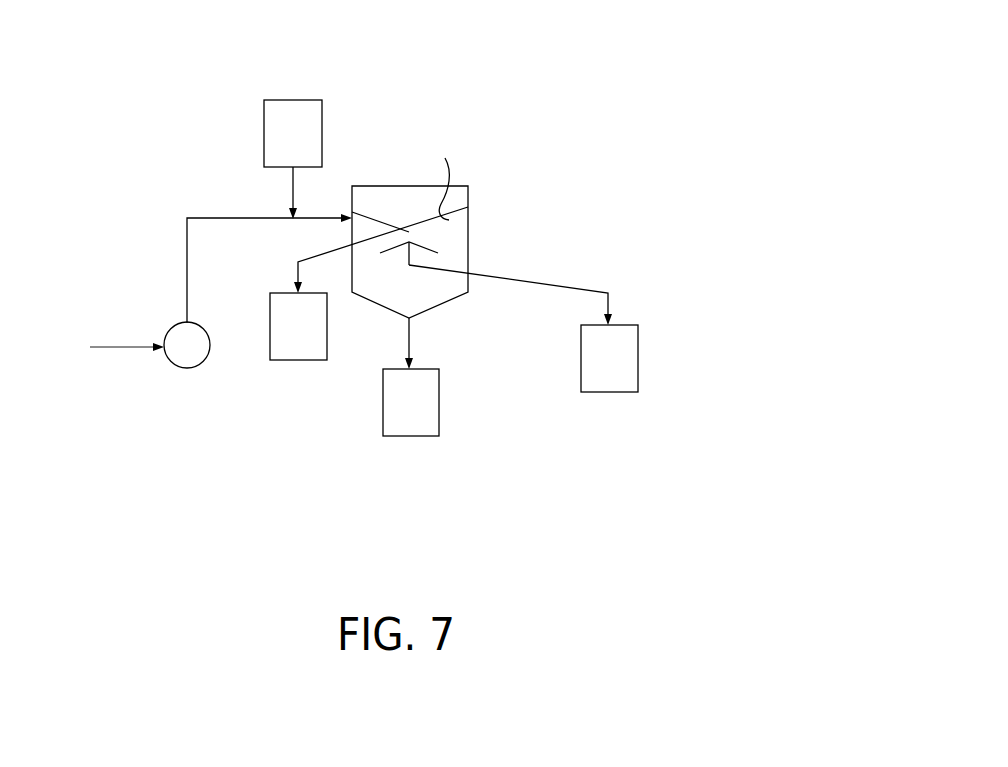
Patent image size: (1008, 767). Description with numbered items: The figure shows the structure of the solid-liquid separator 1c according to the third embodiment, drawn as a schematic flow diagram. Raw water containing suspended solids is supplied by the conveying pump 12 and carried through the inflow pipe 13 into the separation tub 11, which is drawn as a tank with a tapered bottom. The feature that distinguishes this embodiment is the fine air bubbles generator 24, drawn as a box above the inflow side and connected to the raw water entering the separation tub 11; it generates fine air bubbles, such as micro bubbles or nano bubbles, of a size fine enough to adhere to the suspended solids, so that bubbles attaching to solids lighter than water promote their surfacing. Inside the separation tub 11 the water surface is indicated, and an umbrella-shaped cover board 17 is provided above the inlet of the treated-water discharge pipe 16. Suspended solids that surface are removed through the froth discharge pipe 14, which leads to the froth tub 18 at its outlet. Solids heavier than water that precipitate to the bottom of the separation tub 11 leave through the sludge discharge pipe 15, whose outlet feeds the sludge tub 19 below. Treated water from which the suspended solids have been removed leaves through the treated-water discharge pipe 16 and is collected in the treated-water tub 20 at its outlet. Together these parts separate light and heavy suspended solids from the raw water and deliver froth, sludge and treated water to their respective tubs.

The solid-liquid separator 1c is at (574, 72).
The fine air bubbles generator 24 is at (293, 100).
The inflow pipe 13 is at (207, 218).
The conveying pump 12 is at (185, 368).
The separation tub 11 is at (468, 195).
The cover board 17 is at (432, 247).
The froth discharge pipe 14 is at (323, 255).
The froth tub 18 is at (295, 360).
The treated-water discharge pipe 16 is at (608, 293).
The treated-water tub 20 is at (609, 392).
The sludge discharge pipe 15 is at (410, 340).
The sludge tub 19 is at (408, 436).